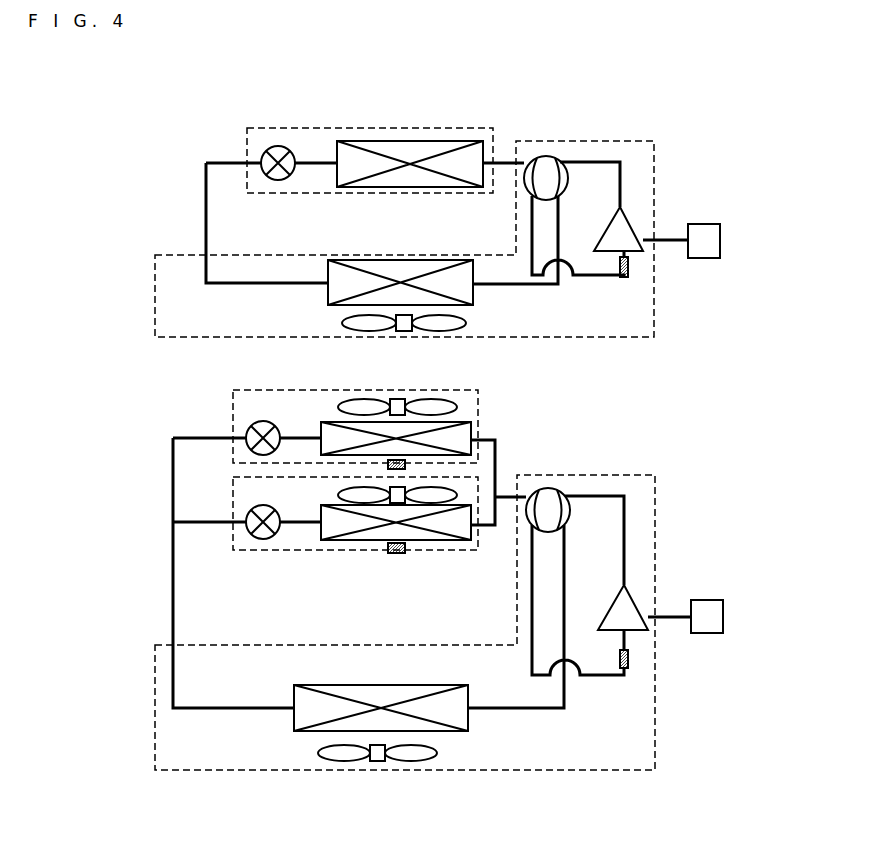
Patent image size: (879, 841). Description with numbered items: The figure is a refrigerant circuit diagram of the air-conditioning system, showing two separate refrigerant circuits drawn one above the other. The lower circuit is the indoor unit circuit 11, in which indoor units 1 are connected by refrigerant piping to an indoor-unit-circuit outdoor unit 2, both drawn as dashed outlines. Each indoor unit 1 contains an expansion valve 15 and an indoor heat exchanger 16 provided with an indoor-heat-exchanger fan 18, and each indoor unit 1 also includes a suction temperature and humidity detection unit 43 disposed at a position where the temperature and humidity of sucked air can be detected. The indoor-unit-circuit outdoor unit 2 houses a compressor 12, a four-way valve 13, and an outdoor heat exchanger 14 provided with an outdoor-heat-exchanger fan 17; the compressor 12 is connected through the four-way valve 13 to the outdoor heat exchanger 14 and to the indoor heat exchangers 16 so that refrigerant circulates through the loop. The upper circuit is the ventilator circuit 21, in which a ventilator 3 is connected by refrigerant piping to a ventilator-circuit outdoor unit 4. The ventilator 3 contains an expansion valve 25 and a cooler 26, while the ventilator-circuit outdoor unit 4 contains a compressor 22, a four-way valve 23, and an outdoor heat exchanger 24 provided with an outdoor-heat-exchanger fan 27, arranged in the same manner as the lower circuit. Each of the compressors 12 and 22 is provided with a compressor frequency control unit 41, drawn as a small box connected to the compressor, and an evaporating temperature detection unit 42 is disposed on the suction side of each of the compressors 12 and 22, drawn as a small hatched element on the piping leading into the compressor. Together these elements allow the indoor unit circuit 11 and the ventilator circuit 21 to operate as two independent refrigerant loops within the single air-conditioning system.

The indoor unit 1 is at (237, 503).
The indoor-unit-circuit outdoor unit 2 is at (655, 505).
The ventilator 3 is at (247, 189).
The ventilator-circuit outdoor unit 4 is at (654, 327).
The indoor unit circuit 11 is at (122, 450).
The compressor 12 is at (638, 600).
The four-way valve 13 is at (555, 490).
The outdoor heat exchanger 14 is at (460, 718).
The expansion valve 15 is at (260, 507).
The indoor heat exchanger 16 is at (333, 527).
The outdoor-heat-exchanger fan 17 is at (340, 757).
The indoor-heat-exchanger fan 18 is at (438, 497).
The ventilator circuit 21 is at (123, 218).
The compressor 22 is at (622, 230).
The four-way valve 23 is at (556, 178).
The outdoor heat exchanger 24 is at (467, 290).
The expansion valve 25 is at (268, 150).
The cooler 26 is at (428, 145).
The outdoor-heat-exchanger fan 27 is at (350, 323).
The compressor frequency control unit 41 is at (707, 240).
The evaporating temperature detection unit 42 is at (627, 273).
The suction temperature and humidity detection unit 43 is at (395, 553).